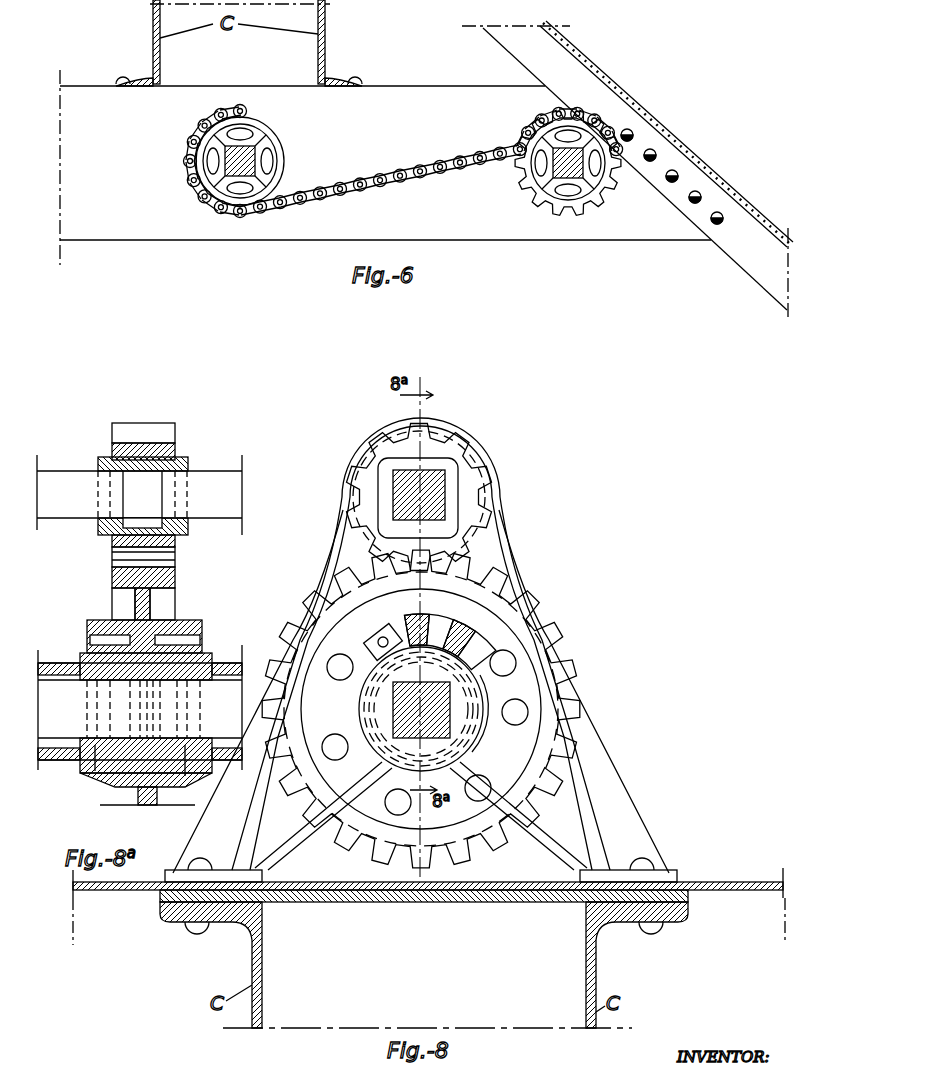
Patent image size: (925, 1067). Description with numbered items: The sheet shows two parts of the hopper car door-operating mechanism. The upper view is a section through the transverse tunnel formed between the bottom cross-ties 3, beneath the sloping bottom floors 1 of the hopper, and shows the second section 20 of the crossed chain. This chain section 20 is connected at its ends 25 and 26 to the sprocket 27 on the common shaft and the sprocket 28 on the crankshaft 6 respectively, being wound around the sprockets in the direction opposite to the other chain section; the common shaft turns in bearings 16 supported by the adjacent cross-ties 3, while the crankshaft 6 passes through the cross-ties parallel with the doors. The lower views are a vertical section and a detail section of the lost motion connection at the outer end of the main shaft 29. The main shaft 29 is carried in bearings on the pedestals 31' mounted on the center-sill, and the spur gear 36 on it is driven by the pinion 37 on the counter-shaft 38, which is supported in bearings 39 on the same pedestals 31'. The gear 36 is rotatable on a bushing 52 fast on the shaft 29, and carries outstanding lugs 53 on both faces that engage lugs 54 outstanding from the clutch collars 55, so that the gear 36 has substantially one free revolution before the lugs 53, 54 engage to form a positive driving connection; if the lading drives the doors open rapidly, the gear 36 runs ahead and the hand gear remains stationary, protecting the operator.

In FIG. 6, the sloping bottom floor 1 is at (681, 152).
In FIG. 6, the bottom cross-tie 3 is at (136, 232).
In FIG. 6, the crankshaft 6 is at (565, 164).
In FIG. 6, the bearing 16 is at (227, 161).
In FIG. 6, the chain section 20 is at (415, 157).
In FIG. 6, the chain end connection 25 is at (246, 108).
In FIG. 6, the chain end connection 26 is at (605, 113).
In FIG. 6, the sprocket 27 is at (266, 153).
In FIG. 6, the sprocket 28 is at (597, 188).
In FIG. 8A, the main shaft 29 is at (226, 706).
In FIG. 8, the main shaft 29 is at (400, 706).
In FIG. 8, the pedestal 31' is at (421, 650).
In FIG. 8A, the spur gear 36 is at (176, 598).
In FIG. 8, the spur gear 36 is at (556, 673).
In FIG. 8A, the pinion 37 is at (165, 436).
In FIG. 8, the pinion 37 is at (440, 489).
In FIG. 8A, the counter-shaft 38 is at (196, 481).
In FIG. 8, the counter-shaft 38 is at (446, 494).
In FIG. 8, the bearing 39 is at (438, 446).
In FIG. 8A, the bushing 52 is at (201, 657).
In FIG. 8, the bushing 52 is at (515, 741).
In FIG. 8A, the lug 53 is at (196, 626).
In FIG. 8, the lug 53 is at (400, 637).
In FIG. 8A, the lug 54 is at (205, 646).
In FIG. 8, the lug 54 is at (470, 656).
In FIG. 8A, the clutch collar 55 is at (185, 776).
In FIG. 8, the clutch collar 55 is at (485, 731).